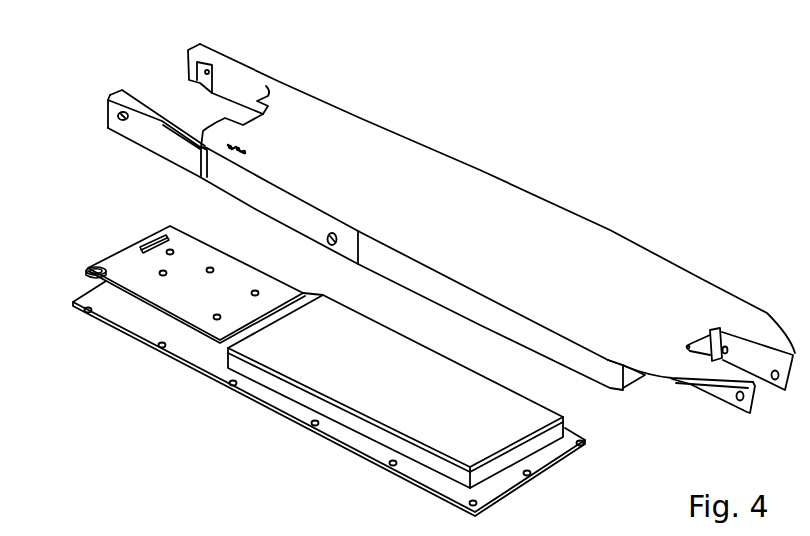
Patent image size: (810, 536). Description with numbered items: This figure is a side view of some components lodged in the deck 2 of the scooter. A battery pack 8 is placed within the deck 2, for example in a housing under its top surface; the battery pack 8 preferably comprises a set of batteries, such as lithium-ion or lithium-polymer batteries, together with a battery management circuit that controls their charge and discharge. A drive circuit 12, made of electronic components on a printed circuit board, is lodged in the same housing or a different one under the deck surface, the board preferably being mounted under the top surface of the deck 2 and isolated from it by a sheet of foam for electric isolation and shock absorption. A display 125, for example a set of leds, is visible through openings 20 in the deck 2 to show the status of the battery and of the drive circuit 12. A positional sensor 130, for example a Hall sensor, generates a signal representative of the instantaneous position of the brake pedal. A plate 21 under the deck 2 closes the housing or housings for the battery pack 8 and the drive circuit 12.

The deck 2 is at (587, 248).
The battery pack 8 is at (472, 418).
The drive circuit 12 is at (130, 265).
The openings 20 is at (237, 142).
The plate 21 is at (92, 298).
The display 125 is at (85, 267).
The positional sensor 130 is at (157, 230).